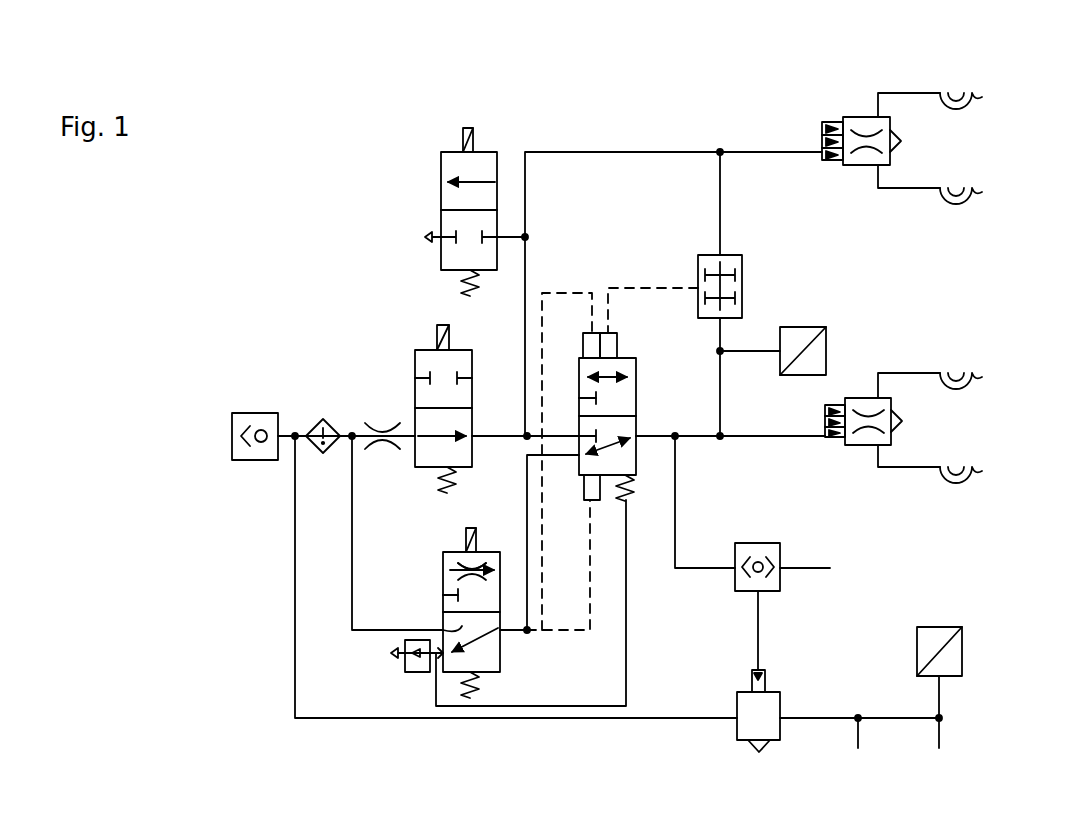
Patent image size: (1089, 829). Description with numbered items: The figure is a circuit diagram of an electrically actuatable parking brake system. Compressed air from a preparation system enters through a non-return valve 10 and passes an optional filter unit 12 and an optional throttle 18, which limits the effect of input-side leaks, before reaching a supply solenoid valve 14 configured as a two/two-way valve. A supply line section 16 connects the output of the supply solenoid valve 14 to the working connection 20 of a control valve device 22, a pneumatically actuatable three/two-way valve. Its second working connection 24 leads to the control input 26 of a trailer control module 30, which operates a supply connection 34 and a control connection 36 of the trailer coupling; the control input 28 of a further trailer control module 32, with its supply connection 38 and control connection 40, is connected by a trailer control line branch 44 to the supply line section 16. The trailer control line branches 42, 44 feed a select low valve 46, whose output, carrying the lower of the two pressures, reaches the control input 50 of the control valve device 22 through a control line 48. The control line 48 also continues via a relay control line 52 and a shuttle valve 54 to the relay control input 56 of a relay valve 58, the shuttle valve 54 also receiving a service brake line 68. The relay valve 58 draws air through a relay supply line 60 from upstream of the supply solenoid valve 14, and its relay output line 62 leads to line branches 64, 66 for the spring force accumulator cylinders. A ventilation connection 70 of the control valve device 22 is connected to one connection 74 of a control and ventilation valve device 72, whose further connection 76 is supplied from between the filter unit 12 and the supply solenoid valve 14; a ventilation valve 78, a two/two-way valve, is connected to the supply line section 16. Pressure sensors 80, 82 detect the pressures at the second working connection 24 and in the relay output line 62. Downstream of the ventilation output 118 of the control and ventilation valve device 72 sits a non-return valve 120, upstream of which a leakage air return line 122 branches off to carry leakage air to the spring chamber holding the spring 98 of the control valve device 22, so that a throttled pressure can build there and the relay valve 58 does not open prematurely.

The non-return valve 10 is at (240, 464).
The filter unit 12 is at (312, 418).
The supply solenoid valve 14 is at (413, 364).
The supply line section 16 is at (505, 426).
The throttle 18 is at (372, 418).
The working connection 20 is at (573, 380).
The control valve device 22 is at (634, 462).
The second working connection 24 is at (639, 382).
The control input 26 is at (826, 440).
The control input 28 is at (827, 162).
The trailer control module 30 is at (856, 450).
The further trailer control module 32 is at (861, 168).
The supply connection 34 is at (982, 378).
The control connection 36 is at (982, 473).
The supply connection 38 is at (982, 97).
The control connection 40 is at (982, 194).
The trailer control line branch 42 is at (736, 440).
The trailer control line branch 44 is at (657, 148).
The select low valve 46 is at (745, 269).
The control line 48 is at (657, 284).
The control input 50 is at (612, 351).
The relay control line 52 is at (686, 578).
The shuttle valve 54 is at (750, 546).
The relay control input 56 is at (768, 684).
The relay valve 58 is at (734, 742).
The relay supply line 60 is at (520, 722).
The relay output line 62 is at (830, 717).
The line branch 64 is at (852, 735).
The line branch 66 is at (943, 736).
The service brake line 68 is at (808, 570).
The ventilation connection 70 is at (573, 398).
The control and ventilation valve device 72 is at (502, 661).
The connection 74 is at (505, 570).
The further connection 76 is at (441, 571).
The ventilation valve 78 is at (440, 165).
The pressure sensor 80 is at (828, 350).
The pressure sensor 82 is at (963, 650).
The spring 98 is at (633, 504).
The ventilation output 118 is at (450, 648).
The non-return valve 120 is at (405, 673).
The leakage air return line 122 is at (628, 650).